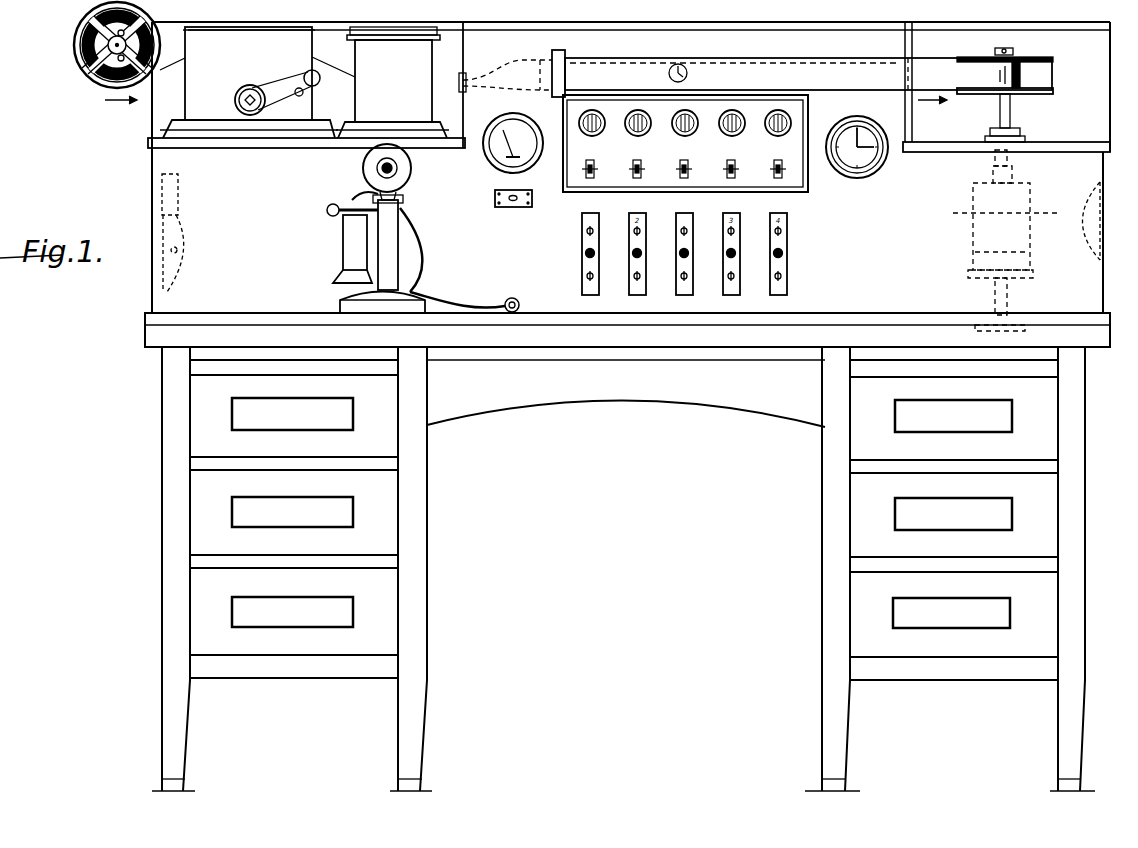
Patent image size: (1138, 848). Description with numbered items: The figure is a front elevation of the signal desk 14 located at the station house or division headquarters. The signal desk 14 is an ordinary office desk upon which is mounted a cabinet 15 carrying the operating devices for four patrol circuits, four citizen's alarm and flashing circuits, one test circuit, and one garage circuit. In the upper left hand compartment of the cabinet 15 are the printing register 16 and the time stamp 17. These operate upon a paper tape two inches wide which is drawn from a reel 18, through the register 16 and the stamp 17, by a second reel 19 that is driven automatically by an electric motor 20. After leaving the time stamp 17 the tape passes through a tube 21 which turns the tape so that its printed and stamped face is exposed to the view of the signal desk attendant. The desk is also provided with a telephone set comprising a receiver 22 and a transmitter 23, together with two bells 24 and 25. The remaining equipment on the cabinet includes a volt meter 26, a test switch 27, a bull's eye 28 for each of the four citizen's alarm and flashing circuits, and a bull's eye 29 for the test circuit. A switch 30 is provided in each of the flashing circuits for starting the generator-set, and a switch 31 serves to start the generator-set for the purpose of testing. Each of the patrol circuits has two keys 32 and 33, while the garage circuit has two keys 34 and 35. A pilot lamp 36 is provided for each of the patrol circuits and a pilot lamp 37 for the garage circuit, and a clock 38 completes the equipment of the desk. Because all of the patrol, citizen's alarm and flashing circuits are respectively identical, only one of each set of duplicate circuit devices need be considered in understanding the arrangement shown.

The signal desk 14 is at (828, 448).
The cabinet 15 is at (629, 167).
The printing register 16 is at (257, 82).
The time stamp 17 is at (401, 82).
The reel 18 is at (88, 72).
The reel 19 is at (1045, 90).
The electric motor 20 is at (975, 232).
The tube 21 is at (522, 58).
The receiver 22 is at (343, 247).
The transmitter 23 is at (362, 168).
The bell 24 is at (180, 276).
The bell 25 is at (1080, 195).
The volt meter 26 is at (498, 122).
The test switch 27 is at (513, 208).
The bull's eye 28 is at (580, 118).
The bull's eye 29 is at (690, 115).
The switch 30 is at (584, 170).
The switch 31 is at (684, 180).
The key 32 is at (585, 230).
The key 33 is at (585, 276).
The key 34 is at (680, 230).
The key 35 is at (680, 278).
The pilot lamp 36 is at (585, 254).
The pilot lamp 37 is at (689, 253).
The clock 38 is at (860, 176).